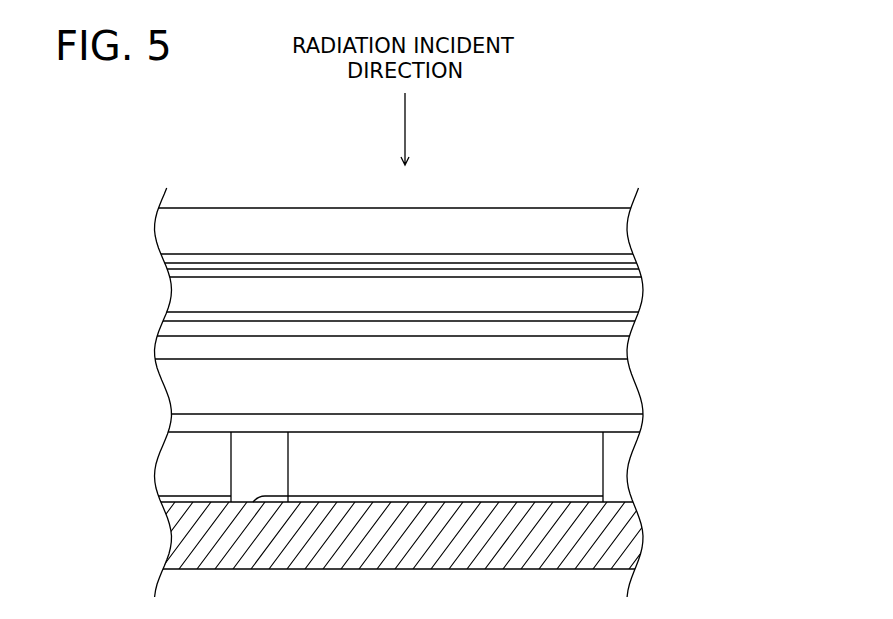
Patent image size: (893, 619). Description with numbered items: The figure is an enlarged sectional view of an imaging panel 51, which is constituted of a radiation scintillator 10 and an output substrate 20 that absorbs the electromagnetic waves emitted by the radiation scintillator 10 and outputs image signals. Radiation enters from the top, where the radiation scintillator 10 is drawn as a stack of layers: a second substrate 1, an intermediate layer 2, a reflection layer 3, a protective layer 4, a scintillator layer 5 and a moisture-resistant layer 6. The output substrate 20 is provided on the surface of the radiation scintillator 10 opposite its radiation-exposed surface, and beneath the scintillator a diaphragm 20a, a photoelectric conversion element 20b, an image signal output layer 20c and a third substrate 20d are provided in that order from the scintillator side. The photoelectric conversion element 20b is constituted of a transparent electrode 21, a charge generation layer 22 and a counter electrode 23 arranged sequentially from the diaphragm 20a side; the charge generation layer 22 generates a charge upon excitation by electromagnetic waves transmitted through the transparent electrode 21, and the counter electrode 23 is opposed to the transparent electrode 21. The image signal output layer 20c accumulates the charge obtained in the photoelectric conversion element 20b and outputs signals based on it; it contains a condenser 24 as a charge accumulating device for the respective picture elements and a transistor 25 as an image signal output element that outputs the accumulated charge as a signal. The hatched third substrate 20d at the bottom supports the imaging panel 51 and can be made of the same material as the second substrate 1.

The imaging panel 51 is at (553, 150).
The second substrate 1 is at (610, 237).
The intermediate layer 2 is at (628, 260).
The reflection layer 3 is at (632, 268).
The protective layer 4 is at (642, 278).
The scintillator layer 5 is at (633, 298).
The moisture-resistant layer 6 is at (628, 318).
The radiation scintillator 10 is at (119, 210).
The output substrate 20 is at (119, 323).
The diaphragm 20a is at (633, 332).
The photoelectric conversion element 20b is at (730, 357).
The image signal output layer 20c is at (620, 468).
The third substrate 20d is at (625, 540).
The transparent electrode 21 is at (623, 353).
The charge generation layer 22 is at (620, 392).
The counter electrode 23 is at (625, 425).
The condenser 24 is at (185, 496).
The transistor 25 is at (275, 493).